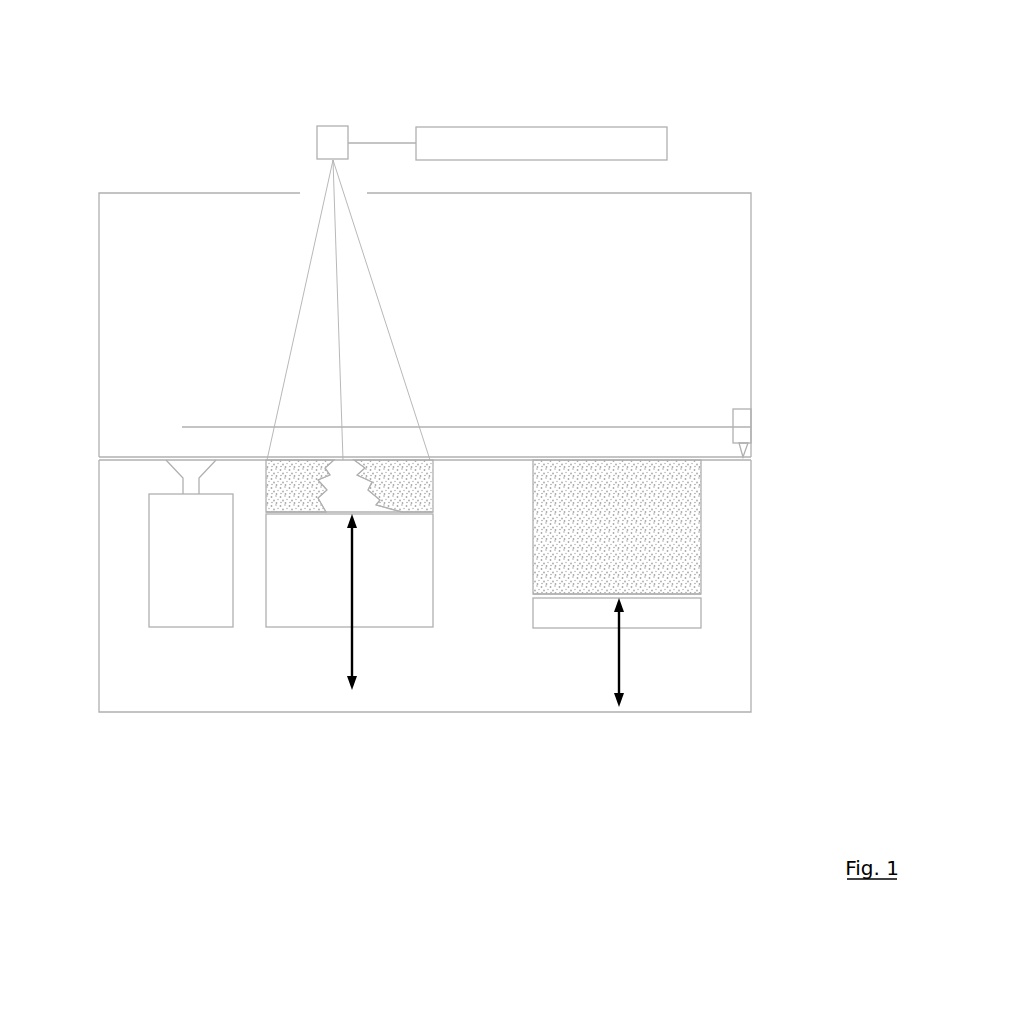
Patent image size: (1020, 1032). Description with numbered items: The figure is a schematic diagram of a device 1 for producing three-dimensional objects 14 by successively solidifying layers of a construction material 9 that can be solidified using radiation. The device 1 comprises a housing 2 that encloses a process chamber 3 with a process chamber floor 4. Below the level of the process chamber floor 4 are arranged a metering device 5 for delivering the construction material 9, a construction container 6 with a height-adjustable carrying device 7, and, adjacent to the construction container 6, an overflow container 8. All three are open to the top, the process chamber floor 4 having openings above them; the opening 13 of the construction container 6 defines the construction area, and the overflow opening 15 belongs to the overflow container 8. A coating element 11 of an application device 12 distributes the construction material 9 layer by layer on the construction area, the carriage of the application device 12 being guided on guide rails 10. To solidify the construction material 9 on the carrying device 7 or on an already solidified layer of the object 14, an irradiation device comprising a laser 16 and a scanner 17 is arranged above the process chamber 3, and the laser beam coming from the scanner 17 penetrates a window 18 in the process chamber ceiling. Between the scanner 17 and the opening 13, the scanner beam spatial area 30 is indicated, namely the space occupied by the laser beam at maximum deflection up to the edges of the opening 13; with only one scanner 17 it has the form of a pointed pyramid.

The device 1 is at (463, 452).
The housing 2 is at (742, 633).
The process chamber 3 is at (663, 342).
The process chamber floor 4 is at (502, 454).
The metering device 5 is at (680, 536).
The construction container 6 is at (407, 587).
The height-adjustable carrying device 7 is at (382, 528).
The overflow container 8 is at (173, 607).
The construction material 9 is at (647, 540).
The guide rails 10 is at (722, 458).
The coating element 11 is at (748, 448).
The application device 12 is at (765, 423).
The opening of the construction container 13 is at (298, 462).
The three-dimensional object 14 is at (336, 503).
The overflow opening 15 is at (192, 461).
The laser 16 is at (505, 143).
The scanner 17 is at (342, 138).
The window 18 is at (310, 184).
The scanner beam spatial area 30 is at (378, 360).